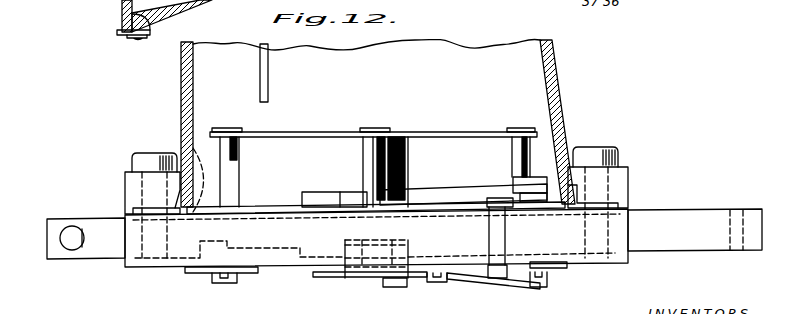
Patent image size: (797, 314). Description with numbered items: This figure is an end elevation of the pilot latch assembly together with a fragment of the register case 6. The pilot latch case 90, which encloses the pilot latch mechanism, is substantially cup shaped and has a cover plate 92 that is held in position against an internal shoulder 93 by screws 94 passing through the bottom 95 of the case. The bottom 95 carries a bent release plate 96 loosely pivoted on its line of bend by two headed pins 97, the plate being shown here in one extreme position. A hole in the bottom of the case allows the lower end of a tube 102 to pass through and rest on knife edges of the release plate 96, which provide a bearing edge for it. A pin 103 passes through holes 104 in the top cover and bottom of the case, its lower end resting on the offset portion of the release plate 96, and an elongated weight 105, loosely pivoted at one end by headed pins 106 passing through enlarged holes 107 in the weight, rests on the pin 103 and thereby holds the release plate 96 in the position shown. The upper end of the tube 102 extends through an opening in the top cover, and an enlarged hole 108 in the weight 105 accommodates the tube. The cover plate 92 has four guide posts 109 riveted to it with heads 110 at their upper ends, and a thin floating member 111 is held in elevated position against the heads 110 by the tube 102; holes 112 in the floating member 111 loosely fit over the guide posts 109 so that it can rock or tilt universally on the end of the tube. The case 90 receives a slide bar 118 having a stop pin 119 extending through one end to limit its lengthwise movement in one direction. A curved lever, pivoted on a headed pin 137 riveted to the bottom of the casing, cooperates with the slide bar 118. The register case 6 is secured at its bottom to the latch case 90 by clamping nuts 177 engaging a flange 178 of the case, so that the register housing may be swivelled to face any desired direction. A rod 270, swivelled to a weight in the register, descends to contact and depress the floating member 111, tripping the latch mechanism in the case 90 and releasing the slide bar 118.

The register case 6 is at (551, 48).
The pilot latch case 90 is at (173, 264).
The cover plate 92 is at (243, 207).
The internal shoulder 93 is at (182, 145).
The screws 94 is at (213, 278).
The bottom of the case 95 is at (255, 272).
The release plate 96 is at (338, 276).
The headed pins 97 is at (385, 284).
The tube 102 is at (404, 163).
The pin 103 is at (488, 228).
The holes 104 is at (490, 268).
The elongated weight 105 is at (445, 192).
The headed pins 106 is at (520, 180).
The enlarged holes 107 is at (500, 243).
The enlarged hole 108 is at (338, 198).
The guide posts 109 is at (238, 160).
The heads 110 is at (226, 129).
The floating member 111 is at (280, 132).
The holes 112 is at (362, 131).
The slide bar 118 is at (672, 230).
The stop pin 119 is at (74, 235).
The headed pin 137 is at (300, 245).
The clamping nuts 177 is at (135, 178).
The flange 178 is at (577, 168).
The rod 270 is at (260, 68).